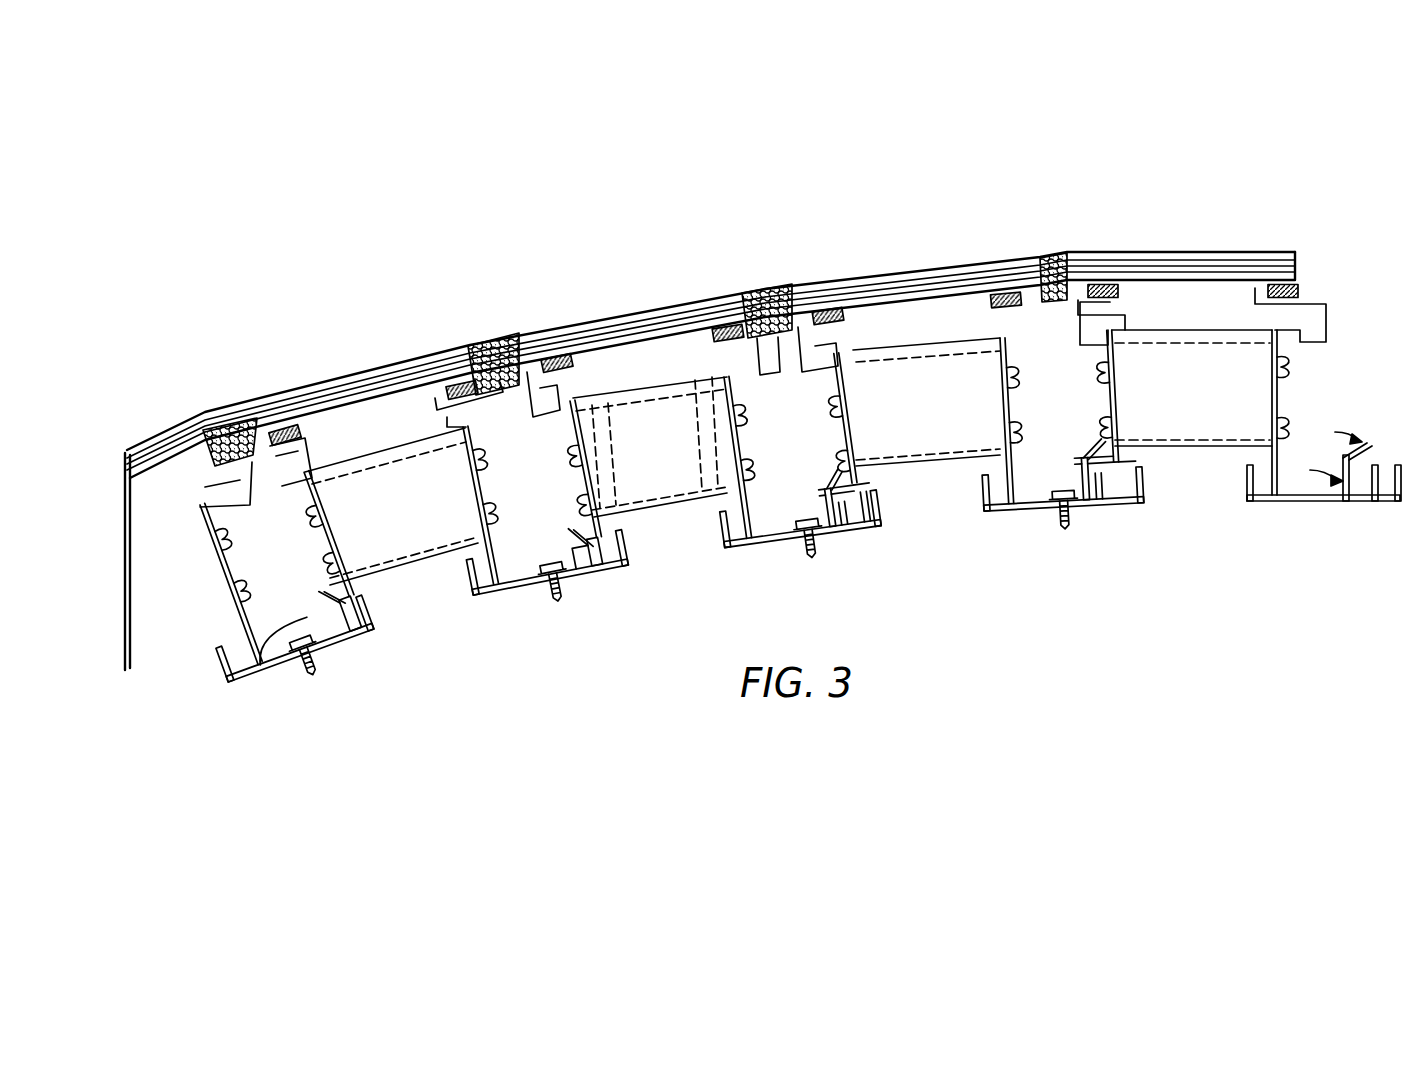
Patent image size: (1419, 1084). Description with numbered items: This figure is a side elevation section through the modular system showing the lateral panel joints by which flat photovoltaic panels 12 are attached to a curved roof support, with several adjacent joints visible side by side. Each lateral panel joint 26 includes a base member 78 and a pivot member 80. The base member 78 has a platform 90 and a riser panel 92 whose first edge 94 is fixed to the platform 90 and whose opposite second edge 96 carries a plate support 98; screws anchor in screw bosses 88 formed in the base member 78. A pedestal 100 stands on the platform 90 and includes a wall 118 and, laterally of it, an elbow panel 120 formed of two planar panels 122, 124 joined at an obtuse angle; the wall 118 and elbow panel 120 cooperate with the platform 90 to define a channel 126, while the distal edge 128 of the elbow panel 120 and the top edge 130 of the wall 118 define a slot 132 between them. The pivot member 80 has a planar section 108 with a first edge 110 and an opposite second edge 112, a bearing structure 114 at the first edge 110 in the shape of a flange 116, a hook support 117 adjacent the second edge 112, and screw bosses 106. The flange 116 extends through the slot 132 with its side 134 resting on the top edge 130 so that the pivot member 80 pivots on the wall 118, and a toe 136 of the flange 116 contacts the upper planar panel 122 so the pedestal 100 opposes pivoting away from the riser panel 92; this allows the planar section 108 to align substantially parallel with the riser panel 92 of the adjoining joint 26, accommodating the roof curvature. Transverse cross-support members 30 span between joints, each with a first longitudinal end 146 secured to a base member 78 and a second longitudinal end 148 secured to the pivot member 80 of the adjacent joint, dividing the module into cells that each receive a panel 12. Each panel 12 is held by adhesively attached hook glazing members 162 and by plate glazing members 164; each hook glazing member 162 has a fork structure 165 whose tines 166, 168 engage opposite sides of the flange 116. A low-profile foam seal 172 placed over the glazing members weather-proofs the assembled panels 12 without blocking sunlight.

The photovoltaic panel 12 is at (645, 305).
The lateral panel joint 26 is at (488, 605).
The transverse cross-support member 30 is at (390, 490).
The base member 78 is at (220, 568).
The pivot member 80 is at (337, 545).
The screw boss 88 is at (487, 517).
The platform 90 is at (556, 590).
The riser panel 92 is at (238, 630).
The first edge 94 is at (530, 577).
The second edge 96 is at (200, 505).
The plate support 98 is at (207, 486).
The pedestal 100 is at (372, 632).
The screw boss 106 is at (567, 490).
The planar section 108 is at (608, 472).
The first edge 110 is at (882, 520).
The second edge 112 is at (868, 368).
The bearing structure 114 is at (840, 528).
The flange 116 is at (828, 533).
The clip 117 is at (529, 385).
The wall 118 is at (880, 515).
The elbow panel 120 is at (832, 480).
The upper planar panel 122 is at (1085, 440).
The planar panel 124 is at (815, 497).
The channel 126 is at (865, 520).
The distal edge 128 is at (325, 580).
The top edge 130 is at (370, 605).
The slot 132 is at (318, 598).
The side 134 is at (347, 640).
The toe 136 is at (262, 668).
The first longitudinal end 146 is at (478, 455).
The second longitudinal end 148 is at (320, 530).
The hook glazing member 162 is at (282, 425).
The plate glazing member 164 is at (458, 383).
The fork structure 165 is at (305, 470).
The tine 166 is at (285, 433).
The tine 168 is at (310, 463).
The seal 172 is at (228, 430).